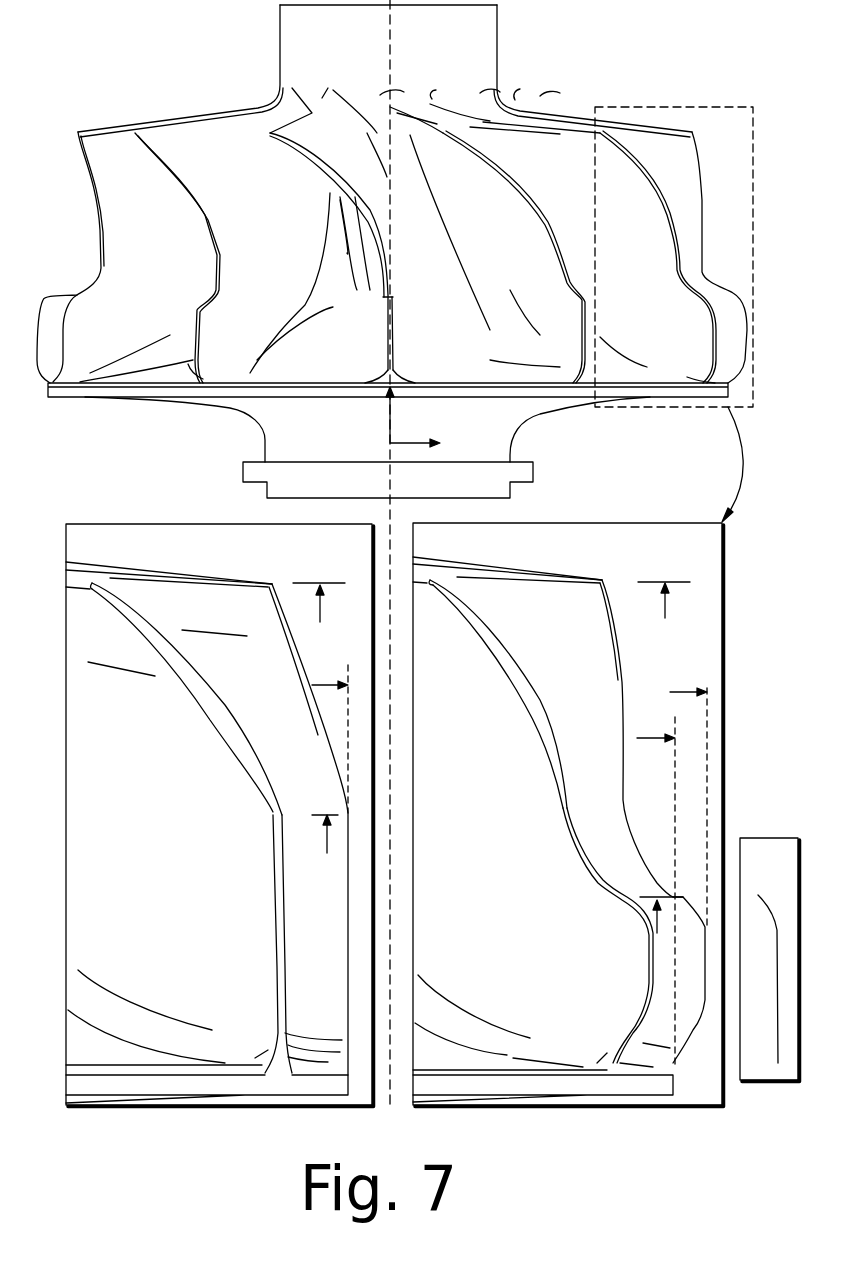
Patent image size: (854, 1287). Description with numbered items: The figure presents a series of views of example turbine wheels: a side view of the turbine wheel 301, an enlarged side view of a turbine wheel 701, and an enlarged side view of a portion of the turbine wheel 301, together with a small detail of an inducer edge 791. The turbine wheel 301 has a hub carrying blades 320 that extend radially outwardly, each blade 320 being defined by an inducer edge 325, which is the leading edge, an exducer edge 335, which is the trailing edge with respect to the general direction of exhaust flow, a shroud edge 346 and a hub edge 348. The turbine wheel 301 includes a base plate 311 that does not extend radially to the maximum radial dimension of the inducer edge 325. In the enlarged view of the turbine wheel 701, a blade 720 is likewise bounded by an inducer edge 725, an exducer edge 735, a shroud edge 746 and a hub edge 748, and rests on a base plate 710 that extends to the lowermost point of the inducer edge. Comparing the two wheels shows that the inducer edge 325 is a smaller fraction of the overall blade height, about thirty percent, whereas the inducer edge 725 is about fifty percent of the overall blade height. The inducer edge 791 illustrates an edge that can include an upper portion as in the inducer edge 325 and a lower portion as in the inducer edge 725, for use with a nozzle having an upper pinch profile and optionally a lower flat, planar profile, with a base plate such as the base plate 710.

The turbine wheel 301 is at (488, 53).
The turbine wheel 701 is at (123, 555).
The inducer edge 791 is at (788, 871).
The exducer edge 735 is at (155, 568).
The blade 720 is at (281, 562).
The shroud edge 746 is at (197, 682).
The inducer edge 725 is at (278, 918).
The hub edge 748 is at (113, 1027).
The base plate 710 is at (188, 1083).
The exducer edge 335 is at (533, 572).
The blade 320 is at (628, 561).
The shroud edge 346 is at (508, 650).
The hub edge 348 is at (435, 1027).
The inducer edge 325 is at (648, 980).
The base plate 311 is at (533, 1080).